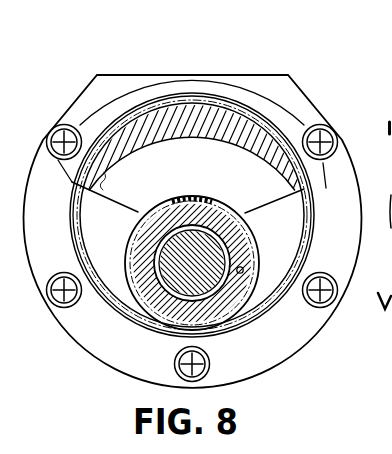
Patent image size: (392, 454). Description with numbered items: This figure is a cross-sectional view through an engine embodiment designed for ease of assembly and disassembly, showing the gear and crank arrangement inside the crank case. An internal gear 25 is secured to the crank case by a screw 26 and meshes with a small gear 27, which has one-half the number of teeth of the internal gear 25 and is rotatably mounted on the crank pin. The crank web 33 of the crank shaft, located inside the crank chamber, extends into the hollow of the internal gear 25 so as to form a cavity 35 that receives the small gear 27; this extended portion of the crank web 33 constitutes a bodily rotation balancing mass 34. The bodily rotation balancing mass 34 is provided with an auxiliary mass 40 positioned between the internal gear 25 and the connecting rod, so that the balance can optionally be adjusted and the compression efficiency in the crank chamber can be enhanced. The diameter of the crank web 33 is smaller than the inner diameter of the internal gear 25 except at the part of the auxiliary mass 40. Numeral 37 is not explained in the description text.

The internal gear 25 is at (93, 332).
The screw 26 is at (56, 124).
The small gear 27 is at (143, 262).
The crank web 33 is at (246, 269).
The bodily rotation balancing mass 34 is at (151, 115).
The cavity 35 is at (194, 196).
The retaining ring 37 is at (157, 262).
The auxiliary mass 40 is at (268, 99).